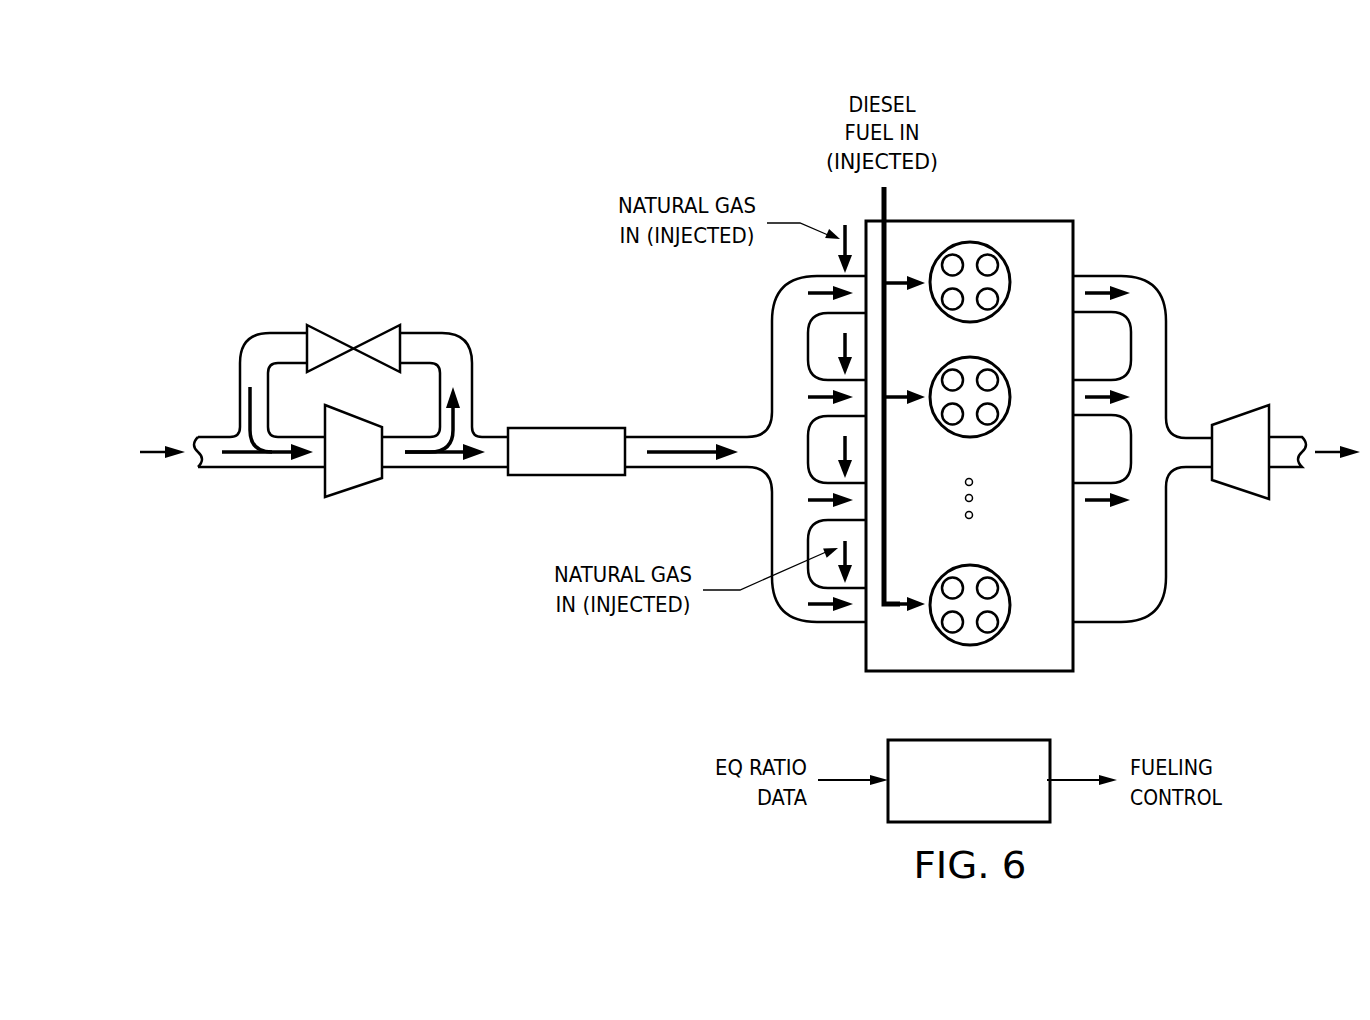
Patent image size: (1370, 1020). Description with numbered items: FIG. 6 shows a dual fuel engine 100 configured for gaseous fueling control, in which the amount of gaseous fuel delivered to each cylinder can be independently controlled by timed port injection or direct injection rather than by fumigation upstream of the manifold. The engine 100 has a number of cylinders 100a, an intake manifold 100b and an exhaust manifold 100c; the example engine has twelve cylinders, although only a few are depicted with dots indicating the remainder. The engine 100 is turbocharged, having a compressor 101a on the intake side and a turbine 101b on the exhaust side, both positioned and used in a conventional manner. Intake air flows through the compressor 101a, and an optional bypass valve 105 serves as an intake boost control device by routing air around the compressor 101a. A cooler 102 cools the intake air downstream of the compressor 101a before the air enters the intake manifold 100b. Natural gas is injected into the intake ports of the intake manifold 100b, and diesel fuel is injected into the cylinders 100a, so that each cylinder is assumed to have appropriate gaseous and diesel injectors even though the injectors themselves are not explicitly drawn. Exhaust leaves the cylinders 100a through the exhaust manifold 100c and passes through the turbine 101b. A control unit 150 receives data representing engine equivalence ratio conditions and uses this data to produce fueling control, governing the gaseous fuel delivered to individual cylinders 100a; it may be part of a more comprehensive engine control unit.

The dual fuel engine 100 is at (1086, 650).
The cylinders 100a is at (1005, 417).
The intake manifold 100b is at (778, 385).
The exhaust manifold 100c is at (1158, 365).
The compressor 101a is at (323, 487).
The turbine 101b is at (1272, 487).
The cooler 102 is at (567, 428).
The bypass valve 105 is at (377, 334).
The control unit 150 is at (968, 740).